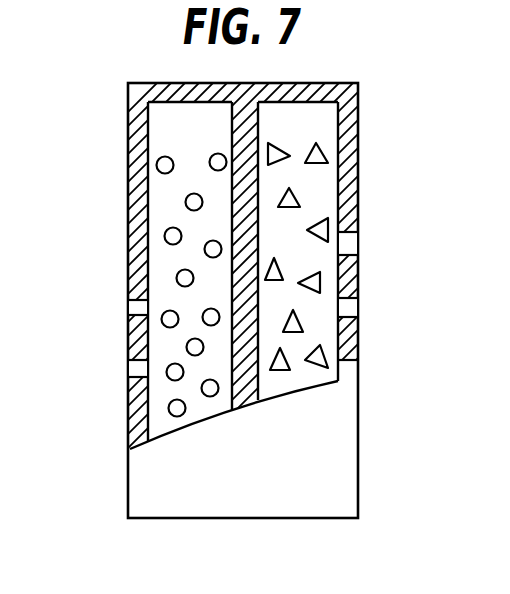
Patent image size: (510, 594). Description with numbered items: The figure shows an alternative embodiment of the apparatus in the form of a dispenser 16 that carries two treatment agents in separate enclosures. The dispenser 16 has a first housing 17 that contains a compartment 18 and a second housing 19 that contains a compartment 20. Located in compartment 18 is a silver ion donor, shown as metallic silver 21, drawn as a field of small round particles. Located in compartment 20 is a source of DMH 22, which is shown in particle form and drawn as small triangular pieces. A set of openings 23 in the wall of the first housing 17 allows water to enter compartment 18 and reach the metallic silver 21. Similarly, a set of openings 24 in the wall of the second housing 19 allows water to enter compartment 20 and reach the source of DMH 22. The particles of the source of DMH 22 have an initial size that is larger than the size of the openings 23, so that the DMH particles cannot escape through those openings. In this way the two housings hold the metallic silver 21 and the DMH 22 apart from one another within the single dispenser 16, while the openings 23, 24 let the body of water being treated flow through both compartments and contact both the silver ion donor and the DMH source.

The dispenser 16 is at (345, 65).
The first housing 17 is at (156, 139).
The compartment 18 is at (175, 144).
The second housing 19 is at (330, 176).
The compartment 20 is at (283, 141).
The metallic silver 21 is at (176, 278).
The source of DMH 22 is at (284, 262).
The set of openings 23 is at (130, 308).
The set of openings 24 is at (358, 306).